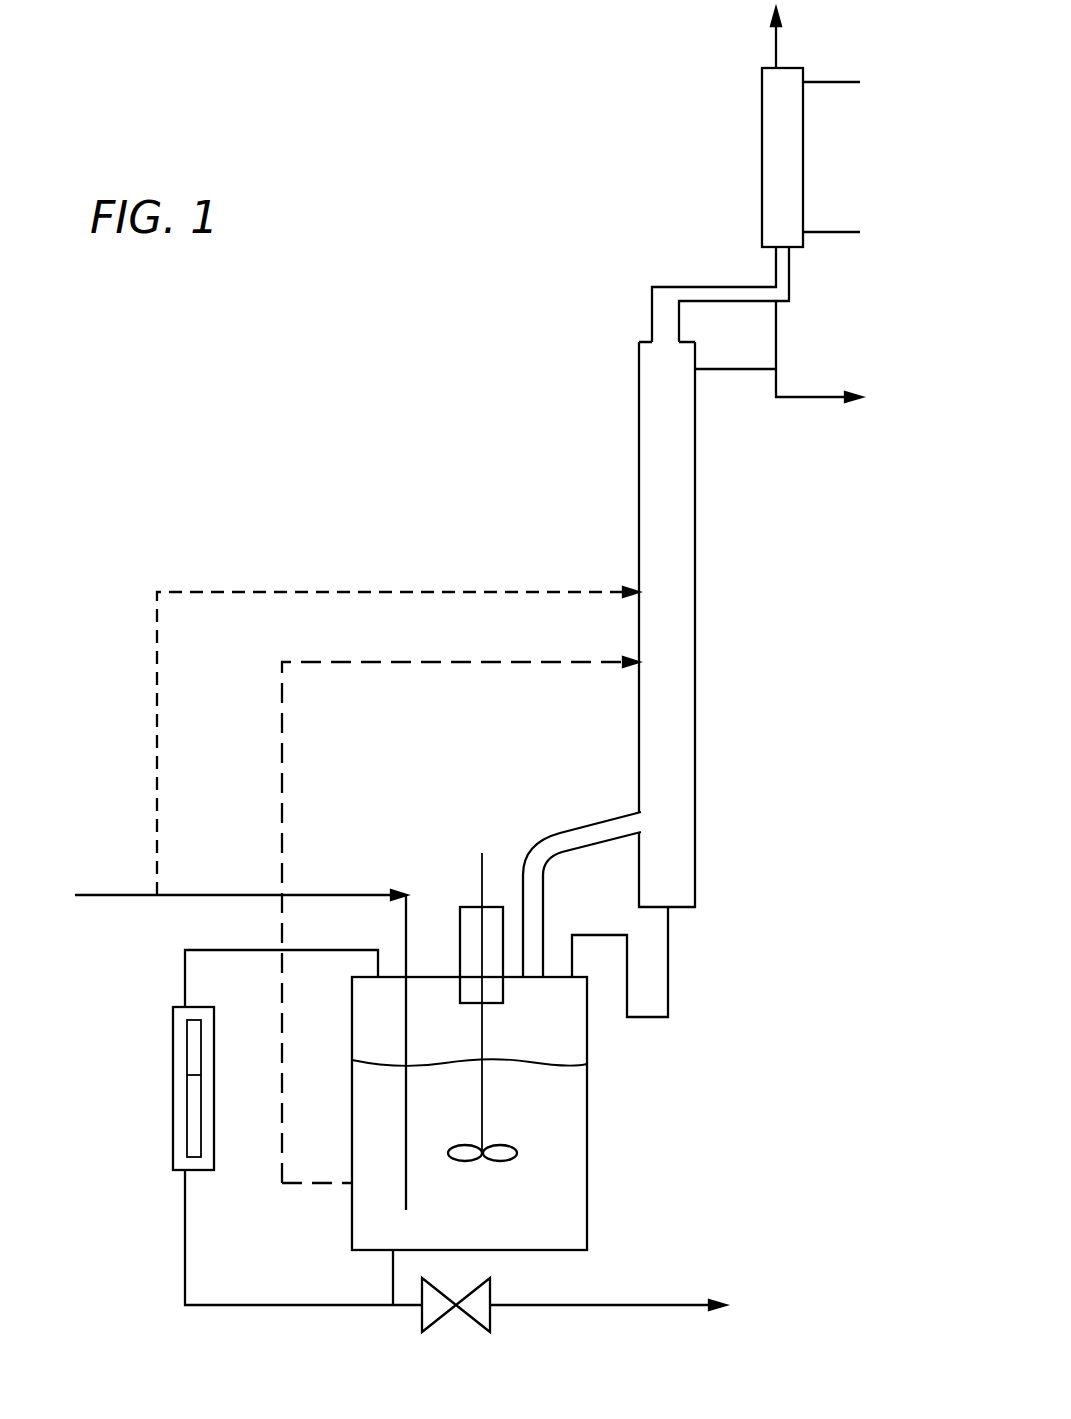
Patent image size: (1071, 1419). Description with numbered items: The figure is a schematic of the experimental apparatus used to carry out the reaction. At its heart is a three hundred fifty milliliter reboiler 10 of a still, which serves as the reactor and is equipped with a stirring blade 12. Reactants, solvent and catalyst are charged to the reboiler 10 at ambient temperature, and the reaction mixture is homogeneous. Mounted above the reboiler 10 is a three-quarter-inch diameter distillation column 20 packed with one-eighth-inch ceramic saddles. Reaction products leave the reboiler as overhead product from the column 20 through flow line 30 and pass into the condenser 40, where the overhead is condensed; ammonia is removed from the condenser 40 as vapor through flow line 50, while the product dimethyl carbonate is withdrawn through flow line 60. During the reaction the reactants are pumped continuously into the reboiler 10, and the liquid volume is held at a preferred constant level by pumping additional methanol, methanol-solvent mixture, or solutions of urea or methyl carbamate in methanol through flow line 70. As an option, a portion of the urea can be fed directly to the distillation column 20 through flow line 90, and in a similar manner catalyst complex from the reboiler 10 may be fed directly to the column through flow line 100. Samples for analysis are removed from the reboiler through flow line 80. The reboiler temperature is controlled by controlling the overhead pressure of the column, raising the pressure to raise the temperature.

The reboiler 10 is at (588, 1157).
The stirring blade 12 is at (511, 1156).
The distillation column 20 is at (696, 705).
The flow line 30 is at (680, 287).
The condenser 40 is at (762, 166).
The flow line 50 is at (775, 44).
The flow line 60 is at (810, 397).
The flow line 70 is at (117, 893).
The flow line 80 is at (617, 1307).
The flow line 90 is at (313, 592).
The flow line 100 is at (282, 707).